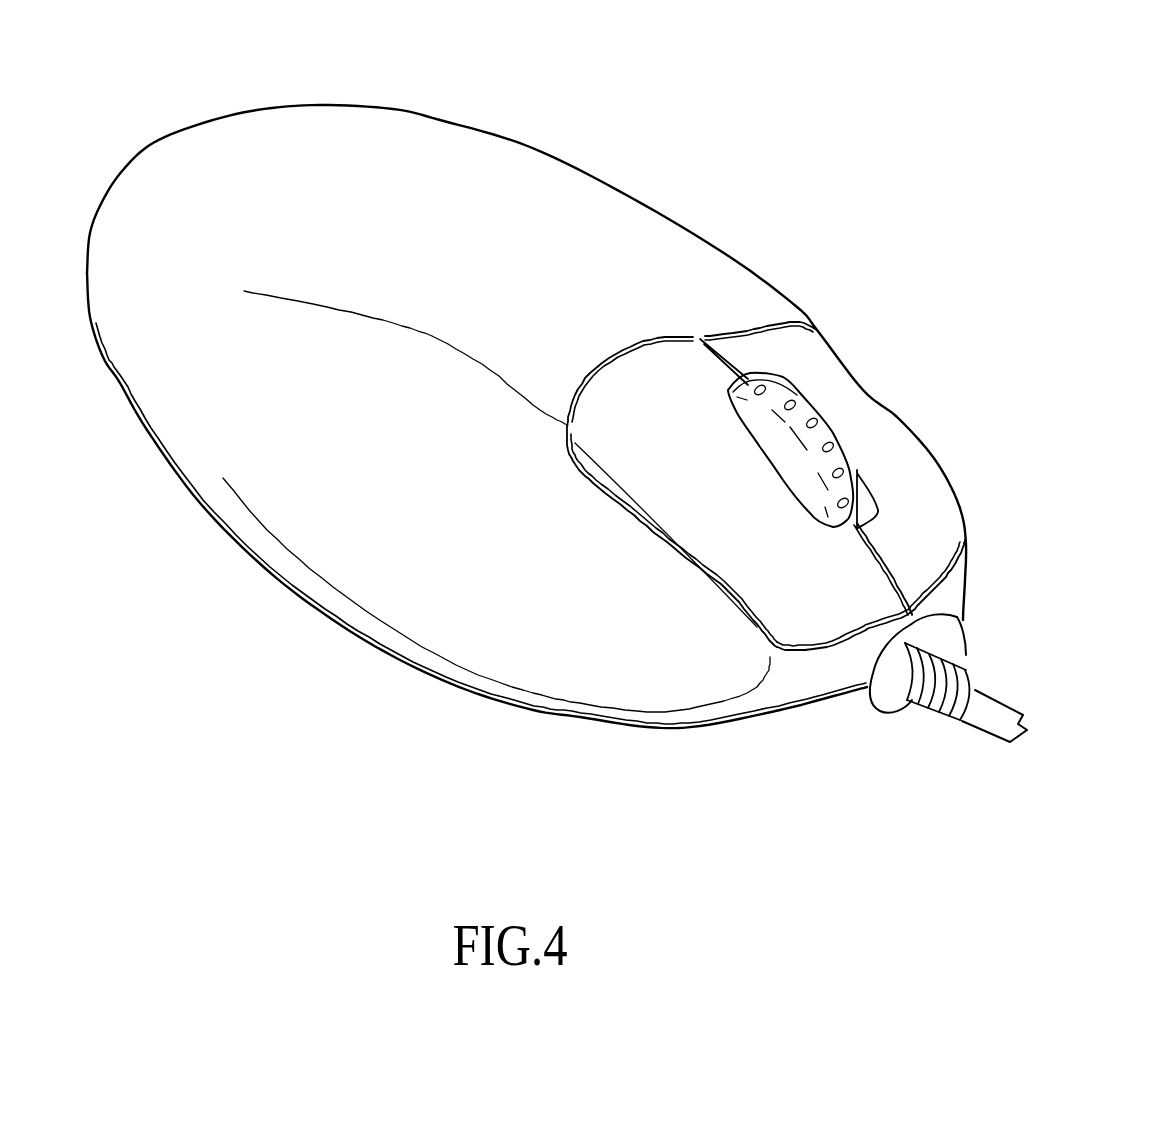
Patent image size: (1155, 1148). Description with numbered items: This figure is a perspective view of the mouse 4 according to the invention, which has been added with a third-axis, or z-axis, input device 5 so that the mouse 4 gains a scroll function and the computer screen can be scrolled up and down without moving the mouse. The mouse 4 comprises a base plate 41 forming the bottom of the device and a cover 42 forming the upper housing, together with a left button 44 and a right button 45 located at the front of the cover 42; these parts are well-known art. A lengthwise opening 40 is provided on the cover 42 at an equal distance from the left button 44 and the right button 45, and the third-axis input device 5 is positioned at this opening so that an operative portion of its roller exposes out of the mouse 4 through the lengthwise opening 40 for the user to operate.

The mouse 4 is at (766, 249).
The third-axis input device 5 is at (855, 430).
The lengthwise opening 40 is at (862, 510).
The base plate 41 is at (817, 707).
The cover 42 is at (578, 217).
The left button 44 is at (927, 553).
The right button 45 is at (778, 600).